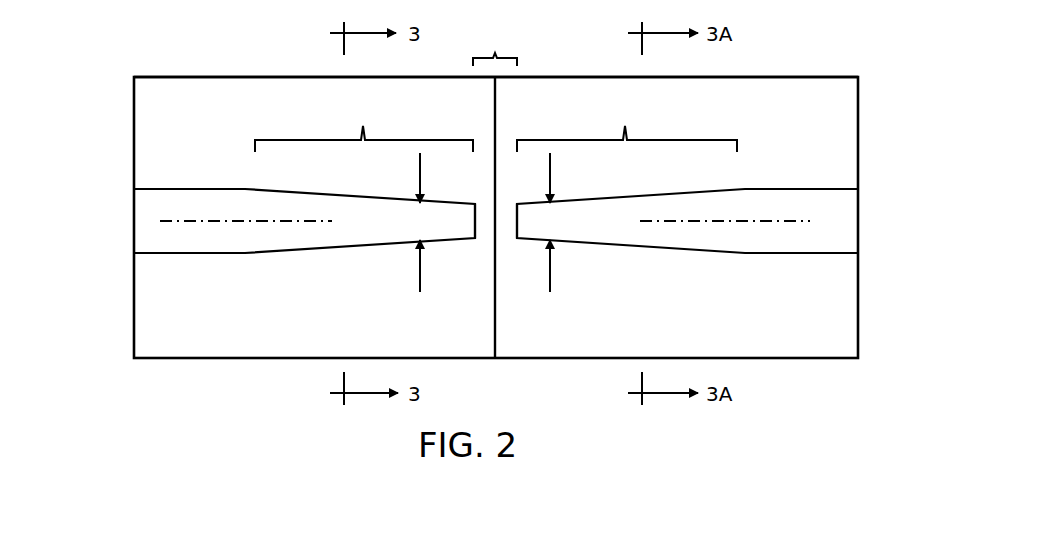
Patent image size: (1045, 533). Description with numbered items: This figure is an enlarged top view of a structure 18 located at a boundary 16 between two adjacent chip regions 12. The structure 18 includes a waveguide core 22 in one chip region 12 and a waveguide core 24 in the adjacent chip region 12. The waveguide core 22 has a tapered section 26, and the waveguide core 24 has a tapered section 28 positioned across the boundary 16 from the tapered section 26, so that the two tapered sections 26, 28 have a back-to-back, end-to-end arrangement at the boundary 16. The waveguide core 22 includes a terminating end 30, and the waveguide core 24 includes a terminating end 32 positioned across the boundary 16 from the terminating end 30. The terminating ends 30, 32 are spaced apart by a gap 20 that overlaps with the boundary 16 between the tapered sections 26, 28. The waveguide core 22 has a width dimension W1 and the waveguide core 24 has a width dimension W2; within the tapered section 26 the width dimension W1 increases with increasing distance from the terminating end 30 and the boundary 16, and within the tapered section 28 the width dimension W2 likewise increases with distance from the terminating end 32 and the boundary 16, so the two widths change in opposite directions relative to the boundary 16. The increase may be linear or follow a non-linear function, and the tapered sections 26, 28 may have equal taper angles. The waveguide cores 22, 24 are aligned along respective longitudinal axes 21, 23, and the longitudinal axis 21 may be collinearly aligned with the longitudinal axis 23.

The structure 18 is at (128, 70).
The chip region 12 is at (162, 128).
The boundary 16 is at (494, 341).
The gap 20 is at (495, 42).
The waveguide core 22 is at (167, 208).
The waveguide core 24 is at (820, 212).
The longitudinal axis 21 is at (258, 222).
The longitudinal axis 23 is at (703, 222).
The tapered section 26 is at (364, 125).
The tapered section 28 is at (627, 125).
The terminating end 30 is at (475, 229).
The terminating end 32 is at (520, 225).
The width dimension W1 is at (444, 229).
The width dimension W2 is at (572, 229).